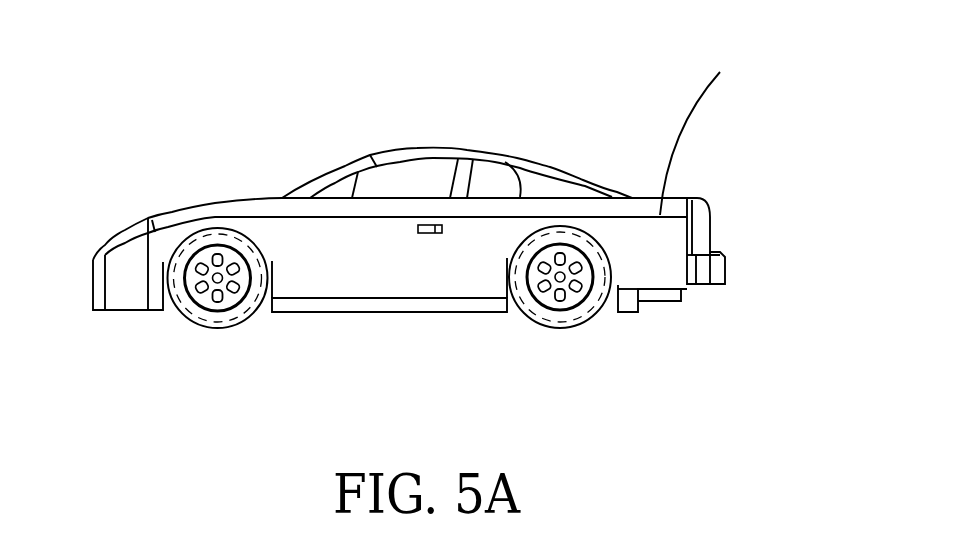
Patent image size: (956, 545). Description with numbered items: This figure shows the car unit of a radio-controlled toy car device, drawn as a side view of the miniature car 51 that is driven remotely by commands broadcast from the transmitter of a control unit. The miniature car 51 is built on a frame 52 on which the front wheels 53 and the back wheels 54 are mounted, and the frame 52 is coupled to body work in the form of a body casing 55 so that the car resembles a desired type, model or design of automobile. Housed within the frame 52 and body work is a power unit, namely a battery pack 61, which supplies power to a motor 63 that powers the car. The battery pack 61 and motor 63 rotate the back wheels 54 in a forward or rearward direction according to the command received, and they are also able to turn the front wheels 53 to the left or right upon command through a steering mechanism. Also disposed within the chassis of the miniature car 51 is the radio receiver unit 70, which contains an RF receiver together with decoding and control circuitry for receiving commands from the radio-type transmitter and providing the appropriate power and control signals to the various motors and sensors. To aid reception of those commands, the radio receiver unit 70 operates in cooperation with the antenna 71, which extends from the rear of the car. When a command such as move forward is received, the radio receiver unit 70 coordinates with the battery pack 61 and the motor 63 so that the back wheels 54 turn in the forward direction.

The miniature car 51 is at (427, 145).
The frame 52 is at (167, 310).
The front wheels 53 is at (213, 322).
The back wheels 54 is at (556, 318).
The body casing 55 is at (143, 220).
The battery pack 61 is at (338, 306).
The motor 63 is at (623, 308).
The radio receiver unit 70 is at (673, 300).
The antenna 71 is at (695, 110).